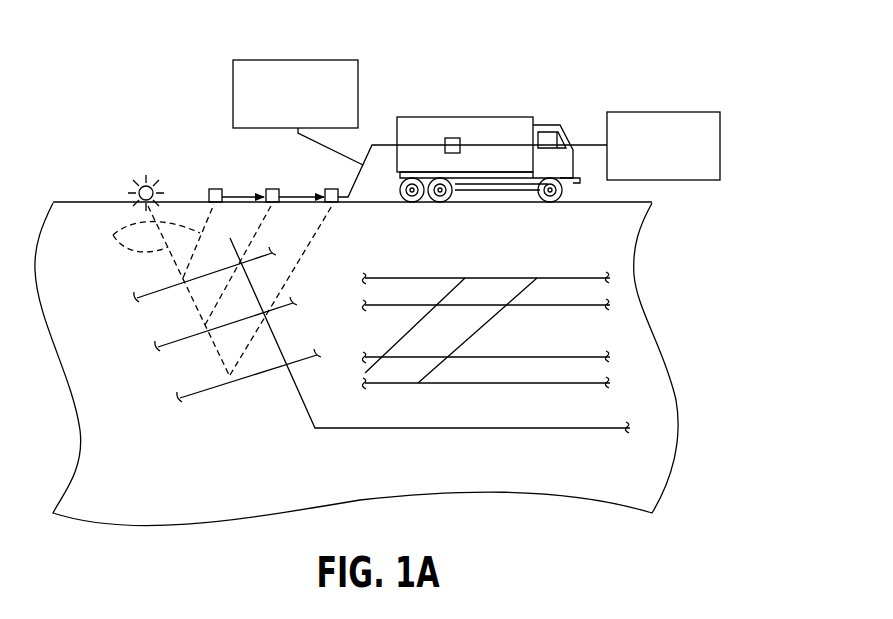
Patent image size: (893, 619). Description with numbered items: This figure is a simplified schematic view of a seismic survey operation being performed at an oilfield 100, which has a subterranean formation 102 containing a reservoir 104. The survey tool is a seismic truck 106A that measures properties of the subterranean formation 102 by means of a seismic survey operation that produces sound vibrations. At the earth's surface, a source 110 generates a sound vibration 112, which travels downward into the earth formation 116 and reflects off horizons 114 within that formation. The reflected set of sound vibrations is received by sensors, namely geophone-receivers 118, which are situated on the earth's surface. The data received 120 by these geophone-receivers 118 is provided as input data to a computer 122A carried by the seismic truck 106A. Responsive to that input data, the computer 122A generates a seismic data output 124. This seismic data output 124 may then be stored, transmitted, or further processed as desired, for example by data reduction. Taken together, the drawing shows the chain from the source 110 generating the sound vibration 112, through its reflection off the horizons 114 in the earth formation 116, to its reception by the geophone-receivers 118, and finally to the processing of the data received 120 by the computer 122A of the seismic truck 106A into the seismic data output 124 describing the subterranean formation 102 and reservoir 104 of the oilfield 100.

The oilfield 100 is at (599, 84).
The subterranean formation 102 is at (478, 298).
The reservoir 104 is at (522, 341).
The seismic truck 106A is at (520, 117).
The source 110 is at (143, 186).
The sound vibration 112 is at (113, 235).
The horizons 114 is at (145, 297).
The earth formation 116 is at (301, 395).
The geophone-receivers 118 is at (331, 188).
The data received 120 is at (263, 60).
The computer 122A is at (453, 138).
The seismic data output 124 is at (667, 112).